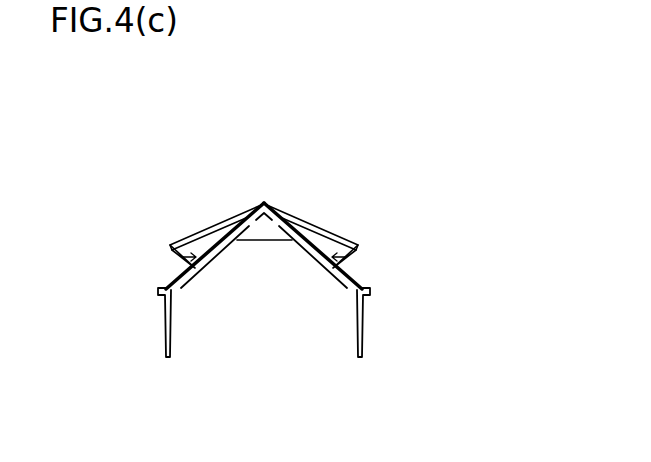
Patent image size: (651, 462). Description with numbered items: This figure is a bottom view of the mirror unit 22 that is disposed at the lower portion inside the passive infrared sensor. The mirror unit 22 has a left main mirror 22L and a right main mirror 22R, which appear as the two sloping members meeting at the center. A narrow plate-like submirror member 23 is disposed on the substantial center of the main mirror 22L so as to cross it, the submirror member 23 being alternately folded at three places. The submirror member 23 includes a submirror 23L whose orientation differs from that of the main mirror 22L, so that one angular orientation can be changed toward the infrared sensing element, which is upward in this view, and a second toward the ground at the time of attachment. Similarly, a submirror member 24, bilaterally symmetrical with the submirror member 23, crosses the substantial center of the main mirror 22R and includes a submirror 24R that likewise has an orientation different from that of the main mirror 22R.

The mirror unit 22 is at (227, 85).
The main mirror 22L is at (180, 257).
The main mirror 22R is at (347, 257).
The submirror member 23 is at (225, 222).
The submirror 23L is at (203, 233).
The submirror member 24 is at (303, 221).
The submirror 24R is at (337, 234).